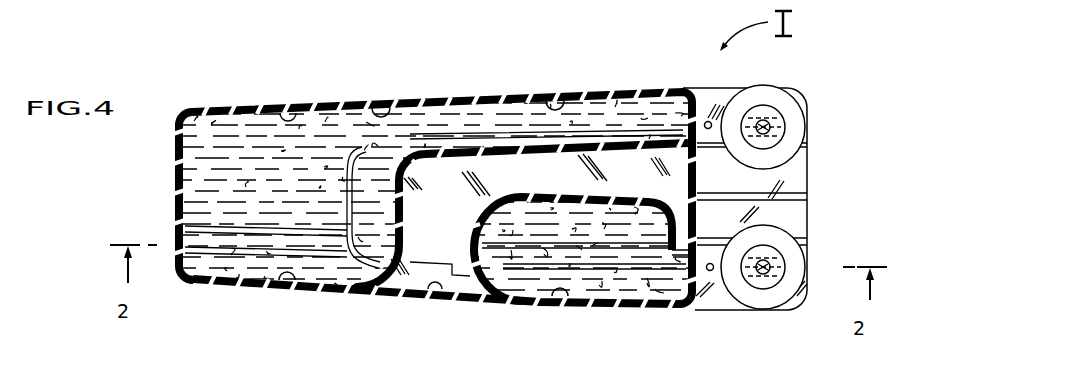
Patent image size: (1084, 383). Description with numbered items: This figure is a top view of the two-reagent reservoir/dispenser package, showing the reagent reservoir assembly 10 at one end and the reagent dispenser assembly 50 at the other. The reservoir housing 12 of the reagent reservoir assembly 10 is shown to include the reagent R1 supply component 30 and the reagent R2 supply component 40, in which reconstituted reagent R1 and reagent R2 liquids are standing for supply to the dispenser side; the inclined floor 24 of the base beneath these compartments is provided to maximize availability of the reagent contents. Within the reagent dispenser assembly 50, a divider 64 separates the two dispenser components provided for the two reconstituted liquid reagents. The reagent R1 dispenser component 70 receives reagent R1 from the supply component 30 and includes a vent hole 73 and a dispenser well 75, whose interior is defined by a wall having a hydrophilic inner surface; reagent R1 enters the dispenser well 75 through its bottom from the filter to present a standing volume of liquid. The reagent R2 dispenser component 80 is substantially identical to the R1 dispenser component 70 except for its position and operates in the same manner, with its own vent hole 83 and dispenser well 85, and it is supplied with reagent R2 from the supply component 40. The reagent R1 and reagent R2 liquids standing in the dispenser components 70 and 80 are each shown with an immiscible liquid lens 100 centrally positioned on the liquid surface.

The reagent reservoir assembly 10 is at (158, 166).
The reservoir housing 12 is at (180, 117).
The inclined floor 24 is at (282, 287).
The reagent R1 supply component 30 is at (411, 304).
The reagent R2 supply component 40 is at (287, 107).
The reagent dispenser assembly 50 is at (822, 65).
The divider 64 is at (787, 196).
The reagent R1 dispenser component 70 is at (747, 322).
The vent hole 73 is at (711, 272).
The dispenser well 75 is at (797, 291).
The reagent R2 dispenser component 80 is at (778, 82).
The vent hole 83 is at (708, 121).
The dispenser well 85 is at (807, 127).
The immiscible liquid lens 100 is at (768, 128).
The reagent R1 is at (572, 328).
The reagent R2 is at (402, 103).